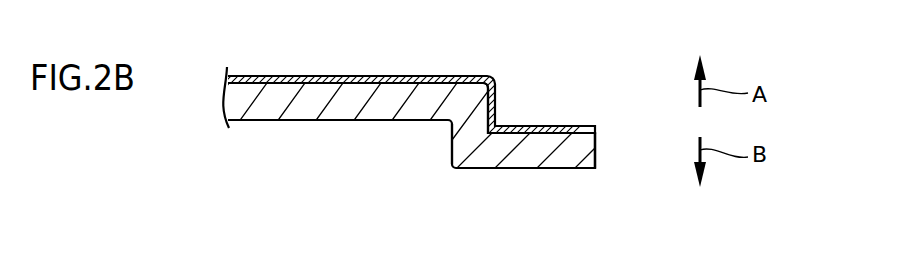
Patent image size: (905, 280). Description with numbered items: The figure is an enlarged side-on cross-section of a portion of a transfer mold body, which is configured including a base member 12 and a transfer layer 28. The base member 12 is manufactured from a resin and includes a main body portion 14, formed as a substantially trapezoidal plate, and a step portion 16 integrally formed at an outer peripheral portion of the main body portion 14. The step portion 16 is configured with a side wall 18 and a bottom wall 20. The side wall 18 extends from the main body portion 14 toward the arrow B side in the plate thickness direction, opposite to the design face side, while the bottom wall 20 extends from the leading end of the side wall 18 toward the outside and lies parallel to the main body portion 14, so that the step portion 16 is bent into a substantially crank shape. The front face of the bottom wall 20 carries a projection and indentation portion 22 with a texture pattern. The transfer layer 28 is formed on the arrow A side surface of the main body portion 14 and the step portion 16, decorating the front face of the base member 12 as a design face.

The base member 12 is at (322, 120).
The main body portion 14 is at (272, 120).
The step portion 16 is at (518, 168).
The side wall 18 is at (450, 148).
The bottom wall 20 is at (580, 168).
The projection and indentation portion 22 is at (553, 126).
The transfer layer 28 is at (473, 75).